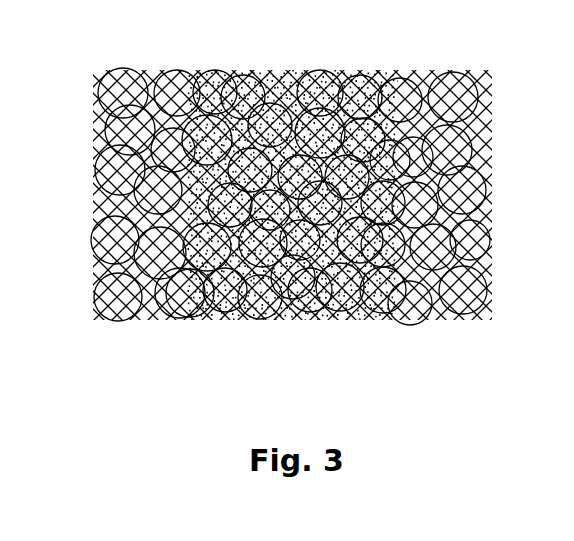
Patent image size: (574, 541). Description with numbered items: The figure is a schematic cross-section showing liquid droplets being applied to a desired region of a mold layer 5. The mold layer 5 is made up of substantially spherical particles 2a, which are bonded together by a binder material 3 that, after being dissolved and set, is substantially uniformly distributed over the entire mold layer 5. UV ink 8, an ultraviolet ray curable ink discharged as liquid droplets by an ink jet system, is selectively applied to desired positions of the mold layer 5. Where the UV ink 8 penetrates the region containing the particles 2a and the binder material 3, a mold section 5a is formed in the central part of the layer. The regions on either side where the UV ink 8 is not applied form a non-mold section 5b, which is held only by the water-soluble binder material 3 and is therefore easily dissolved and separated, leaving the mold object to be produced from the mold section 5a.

The particles 2a is at (104, 130).
The binder material 3 is at (102, 195).
The mold layer 5 is at (500, 73).
The mold section 5a is at (398, 328).
The non-mold section 5b is at (185, 328).
The UV ink 8 is at (272, 72).